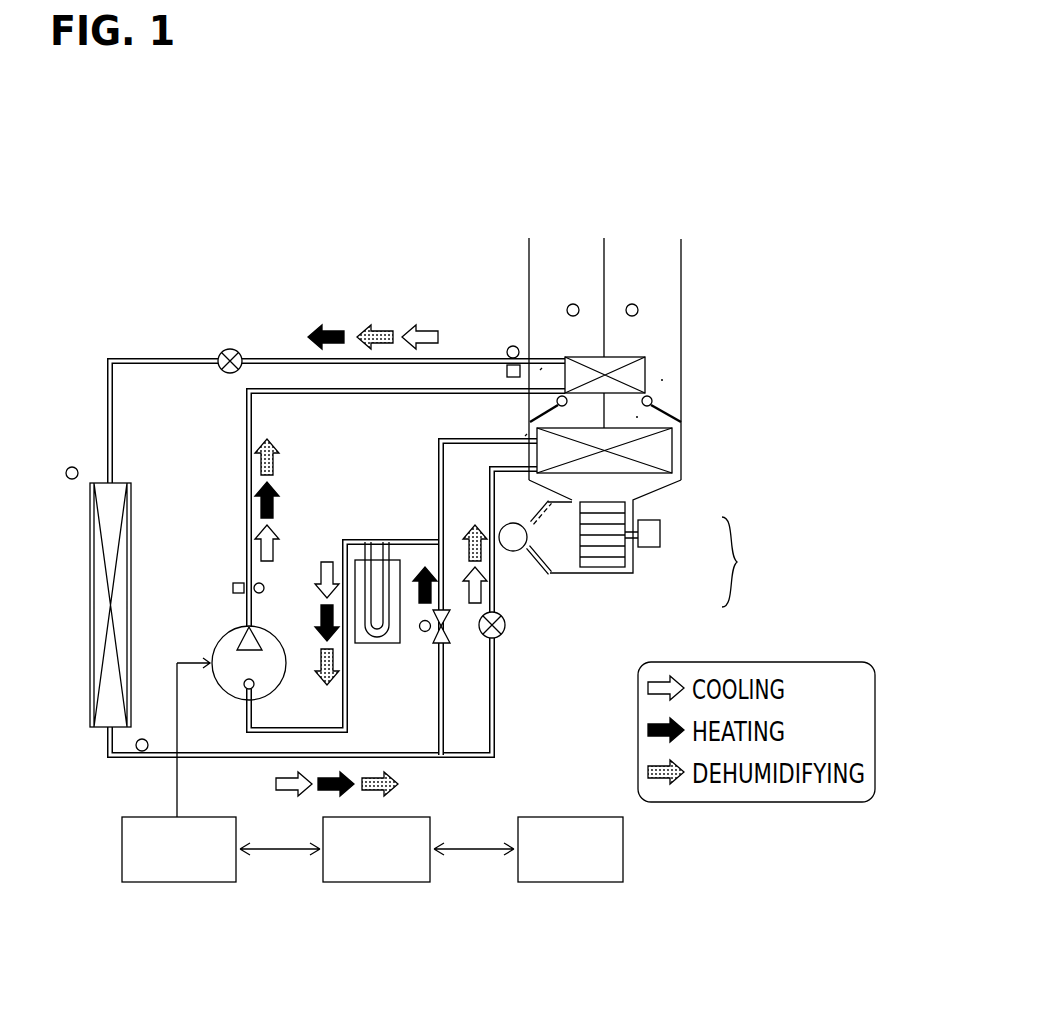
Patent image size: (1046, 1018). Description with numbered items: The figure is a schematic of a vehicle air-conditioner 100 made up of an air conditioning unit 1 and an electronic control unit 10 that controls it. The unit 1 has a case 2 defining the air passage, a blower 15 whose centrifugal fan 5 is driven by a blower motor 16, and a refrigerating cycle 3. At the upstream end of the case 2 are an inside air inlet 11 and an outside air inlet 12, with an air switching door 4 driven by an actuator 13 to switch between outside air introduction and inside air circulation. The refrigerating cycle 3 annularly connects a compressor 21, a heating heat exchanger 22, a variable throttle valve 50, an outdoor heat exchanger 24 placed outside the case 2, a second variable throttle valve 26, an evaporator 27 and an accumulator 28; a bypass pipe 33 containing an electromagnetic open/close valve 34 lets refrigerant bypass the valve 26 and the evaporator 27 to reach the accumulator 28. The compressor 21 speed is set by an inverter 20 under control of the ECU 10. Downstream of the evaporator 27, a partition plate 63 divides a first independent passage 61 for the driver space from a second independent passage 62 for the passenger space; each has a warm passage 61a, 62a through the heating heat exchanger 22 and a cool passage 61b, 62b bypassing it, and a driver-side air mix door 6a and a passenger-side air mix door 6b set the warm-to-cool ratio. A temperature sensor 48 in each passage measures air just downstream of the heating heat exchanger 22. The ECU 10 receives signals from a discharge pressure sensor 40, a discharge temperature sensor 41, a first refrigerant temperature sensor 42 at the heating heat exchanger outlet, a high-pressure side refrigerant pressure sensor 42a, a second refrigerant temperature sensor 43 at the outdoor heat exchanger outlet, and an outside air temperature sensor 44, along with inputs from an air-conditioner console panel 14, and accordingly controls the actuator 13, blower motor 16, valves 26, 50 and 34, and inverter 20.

The air-conditioner 100 is at (310, 426).
The air conditioning unit 1 is at (585, 374).
The case 2 is at (644, 465).
The refrigerating cycle 3 is at (310, 478).
The air switching door 4 is at (543, 553).
The centrifugal fan 5 is at (612, 560).
The driver-side air mix door 6a is at (673, 410).
The passenger-side air mix door 6b is at (548, 405).
The electronic control unit 10 is at (377, 883).
The inside air inlet 11 is at (537, 503).
The outside air inlet 12 is at (525, 552).
The actuator 13 is at (503, 530).
The air-conditioner console panel 14 is at (572, 883).
The blower 15 is at (679, 554).
The blower motor 16 is at (660, 535).
The inverter 20 is at (178, 883).
The compressor 21 is at (212, 648).
The heating heat exchanger 22 is at (647, 360).
The outdoor heat exchanger 24 is at (131, 520).
The variable throttle valve 26 is at (502, 635).
The evaporator 27 is at (662, 460).
The accumulator 28 is at (380, 644).
The bypass pipe 33 is at (440, 740).
The electromagnetic open/close valve 34 is at (425, 632).
The discharge pressure sensor 40 is at (233, 588).
The discharge temperature sensor 41 is at (264, 588).
The first refrigerant temperature sensor 42 is at (513, 346).
The high-pressure side refrigerant pressure sensor 42a is at (507, 368).
The second refrigerant temperature sensor 43 is at (143, 738).
The outside air temperature sensor 44 is at (73, 467).
The temperature sensor 48 is at (579, 307).
The variable throttle valve 50 is at (238, 351).
The first independent passage 61 is at (647, 260).
The first warm passage 61a is at (638, 417).
The first cool passage 61b is at (663, 380).
The second independent passage 62 is at (565, 267).
The second warm passage 62a is at (525, 436).
The second cool passage 62b is at (540, 372).
The partition plate 63 is at (604, 267).